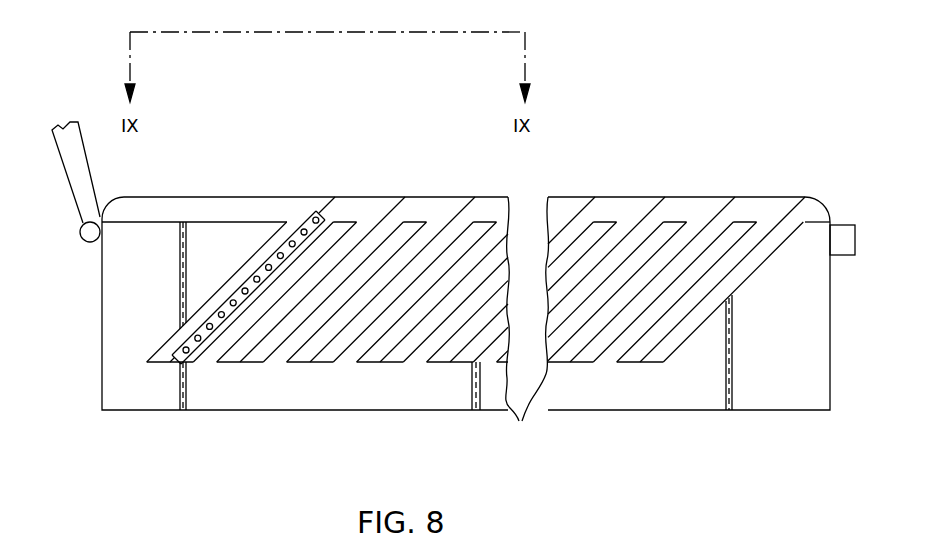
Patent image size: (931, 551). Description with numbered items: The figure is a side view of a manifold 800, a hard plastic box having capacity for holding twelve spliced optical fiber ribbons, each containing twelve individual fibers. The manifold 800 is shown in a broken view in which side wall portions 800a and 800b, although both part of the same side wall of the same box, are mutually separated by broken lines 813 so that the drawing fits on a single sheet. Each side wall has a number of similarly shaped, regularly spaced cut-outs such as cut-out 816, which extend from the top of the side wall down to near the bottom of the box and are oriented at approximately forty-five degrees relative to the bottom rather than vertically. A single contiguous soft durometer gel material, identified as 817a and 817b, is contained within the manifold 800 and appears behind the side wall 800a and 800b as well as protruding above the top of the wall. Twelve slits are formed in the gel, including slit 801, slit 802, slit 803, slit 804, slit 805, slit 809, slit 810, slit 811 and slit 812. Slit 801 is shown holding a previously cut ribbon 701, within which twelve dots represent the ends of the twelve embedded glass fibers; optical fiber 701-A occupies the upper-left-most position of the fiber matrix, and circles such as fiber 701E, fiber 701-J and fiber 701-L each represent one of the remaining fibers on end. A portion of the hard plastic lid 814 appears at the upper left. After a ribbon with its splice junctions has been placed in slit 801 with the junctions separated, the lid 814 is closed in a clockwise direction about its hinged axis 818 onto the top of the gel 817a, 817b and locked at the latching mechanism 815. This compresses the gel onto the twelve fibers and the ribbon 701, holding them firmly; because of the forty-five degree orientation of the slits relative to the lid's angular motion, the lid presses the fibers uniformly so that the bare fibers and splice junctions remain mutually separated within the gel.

The manifold 800 is at (614, 81).
The side wall section 800a is at (186, 411).
The side wall section 800b is at (776, 388).
The slit 801 is at (331, 199).
The slit 802 is at (392, 207).
The slit 803 is at (464, 207).
The slit 804 is at (394, 360).
The slit 805 is at (468, 364).
The slit 809 is at (581, 207).
The slit 810 is at (651, 207).
The slit 811 is at (723, 209).
The slit 812 is at (791, 207).
The broken lines 813 is at (522, 421).
The lid 814 is at (94, 182).
The latching mechanism 815 is at (839, 257).
The cut-out 816 is at (634, 362).
The soft durometer material 817a is at (156, 207).
The soft durometer material 817b is at (696, 207).
The hinged axis 818 is at (85, 240).
The ribbon 701 is at (322, 210).
The optical fiber 701-A is at (311, 213).
The glass fiber 701E is at (263, 262).
The glass fiber 701-J is at (203, 321).
The glass fiber 701-L is at (178, 344).